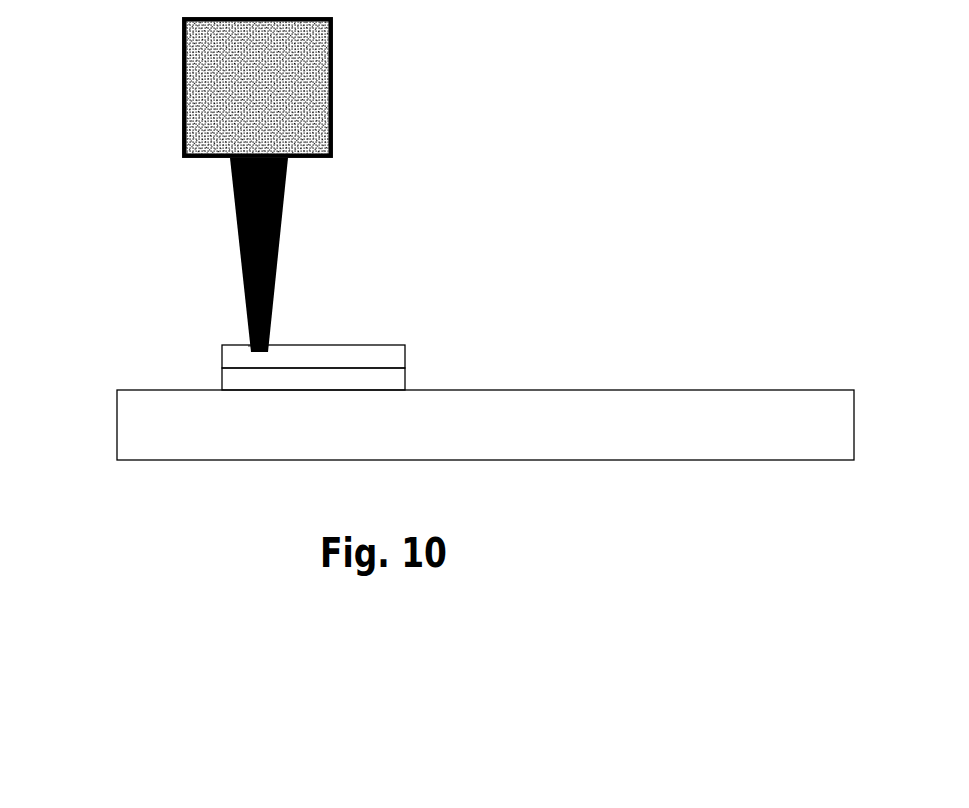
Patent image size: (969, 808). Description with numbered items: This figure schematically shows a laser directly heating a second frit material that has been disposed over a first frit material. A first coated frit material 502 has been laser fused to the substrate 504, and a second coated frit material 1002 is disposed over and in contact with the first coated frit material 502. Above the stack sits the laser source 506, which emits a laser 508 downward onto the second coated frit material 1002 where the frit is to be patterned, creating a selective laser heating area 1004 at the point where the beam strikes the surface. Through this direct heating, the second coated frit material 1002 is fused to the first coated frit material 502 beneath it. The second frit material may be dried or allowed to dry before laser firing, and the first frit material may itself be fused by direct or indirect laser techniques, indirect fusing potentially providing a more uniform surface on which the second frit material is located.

The laser source 506 is at (333, 86).
The laser 508 is at (280, 232).
The selective laser heating area 1004 is at (242, 341).
The second coated frit material 1002 is at (342, 356).
The first coated frit material 502 is at (382, 375).
The substrate 504 is at (117, 425).